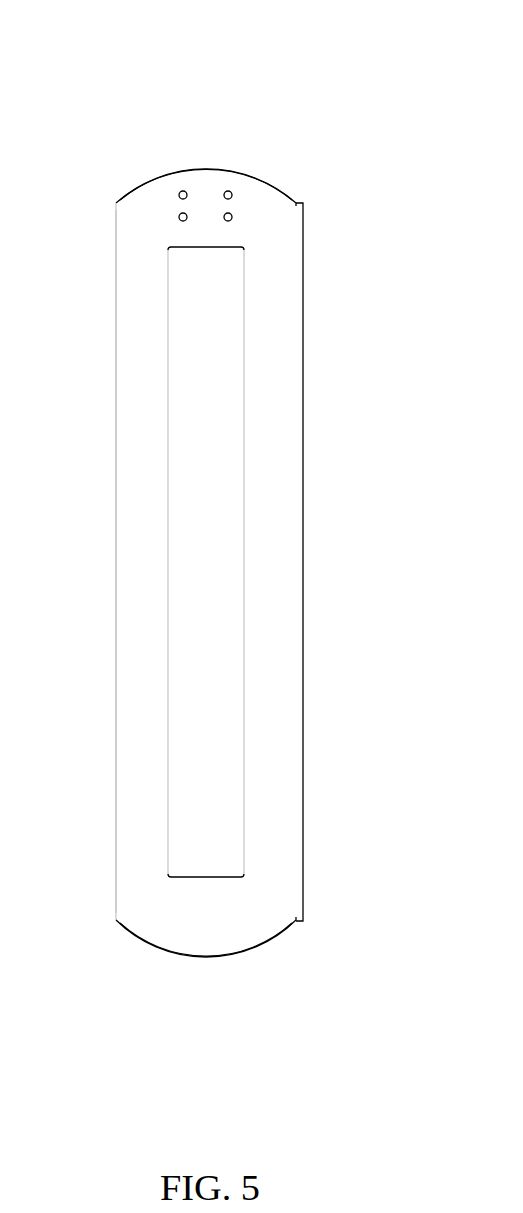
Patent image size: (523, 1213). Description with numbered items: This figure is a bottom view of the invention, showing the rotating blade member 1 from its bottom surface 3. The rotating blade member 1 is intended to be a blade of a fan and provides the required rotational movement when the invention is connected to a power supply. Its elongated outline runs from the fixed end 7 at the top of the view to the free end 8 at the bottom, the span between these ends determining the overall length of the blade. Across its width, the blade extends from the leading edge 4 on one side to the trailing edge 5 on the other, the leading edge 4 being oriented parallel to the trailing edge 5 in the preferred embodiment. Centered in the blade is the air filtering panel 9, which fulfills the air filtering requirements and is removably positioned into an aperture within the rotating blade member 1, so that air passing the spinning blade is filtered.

The rotating blade member 1 is at (337, 98).
The bottom surface 3 is at (271, 402).
The leading edge 4 is at (303, 562).
The trailing edge 5 is at (116, 571).
The fixed end 7 is at (199, 168).
The free end 8 is at (197, 958).
The air filtering panel 9 is at (216, 563).